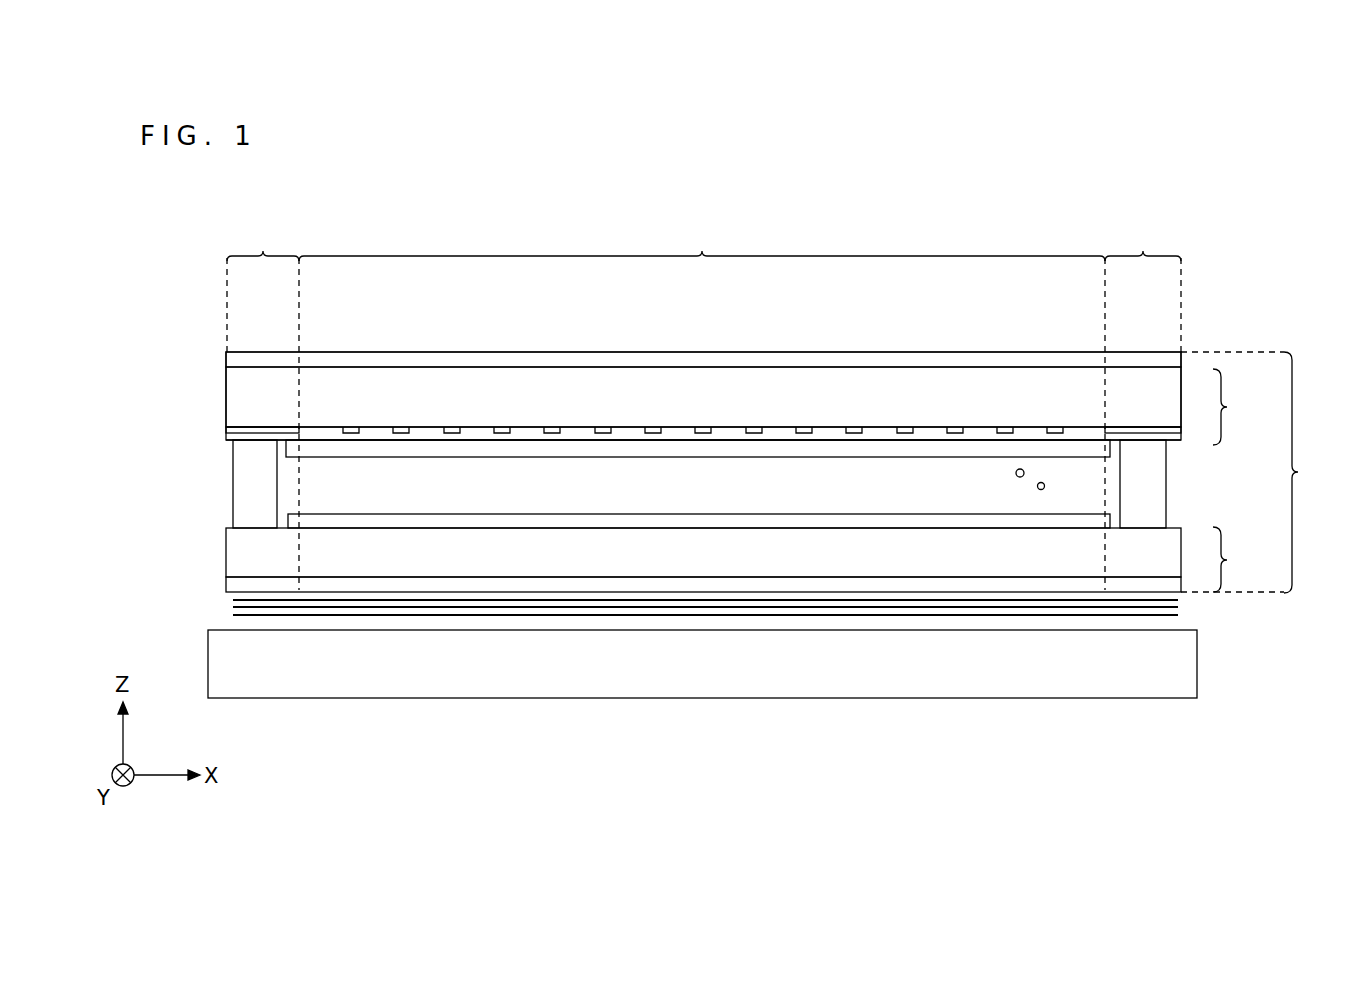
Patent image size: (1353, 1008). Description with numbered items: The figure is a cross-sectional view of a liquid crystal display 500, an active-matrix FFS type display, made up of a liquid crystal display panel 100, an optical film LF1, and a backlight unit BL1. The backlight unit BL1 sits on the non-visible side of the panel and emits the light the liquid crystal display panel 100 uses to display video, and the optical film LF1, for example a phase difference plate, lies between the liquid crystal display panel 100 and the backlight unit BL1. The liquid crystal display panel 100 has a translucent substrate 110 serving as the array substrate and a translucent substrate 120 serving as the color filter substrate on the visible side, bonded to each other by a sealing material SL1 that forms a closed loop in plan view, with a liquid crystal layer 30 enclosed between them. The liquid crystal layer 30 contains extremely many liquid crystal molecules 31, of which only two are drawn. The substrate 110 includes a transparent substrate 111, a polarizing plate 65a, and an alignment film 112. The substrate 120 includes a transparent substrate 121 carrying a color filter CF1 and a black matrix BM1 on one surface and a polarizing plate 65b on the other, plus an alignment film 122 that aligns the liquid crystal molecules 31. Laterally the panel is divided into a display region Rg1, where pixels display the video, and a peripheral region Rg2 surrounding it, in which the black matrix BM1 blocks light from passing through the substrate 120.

The liquid crystal display 500 is at (1242, 293).
The liquid crystal display panel 100 is at (1313, 472).
The substrate 120 is at (1241, 407).
The substrate 110 is at (1241, 559).
The transparent substrate 121 is at (242, 405).
The transparent substrate 111 is at (233, 554).
The polarizing plate 65b is at (235, 359).
The polarizing plate 65a is at (233, 585).
The black matrix BM1 is at (230, 430).
The color filter CF1 is at (930, 437).
The alignment film 122 is at (358, 450).
The alignment film 112 is at (440, 522).
The liquid crystal layer 30 is at (330, 487).
The sealing material SL1 is at (1152, 484).
The liquid crystal molecules 31 is at (1037, 486).
The optical film LF1 is at (1195, 600).
The backlight unit BL1 is at (1188, 663).
The display region Rg1 is at (702, 242).
The peripheral region Rg2 is at (704, 242).